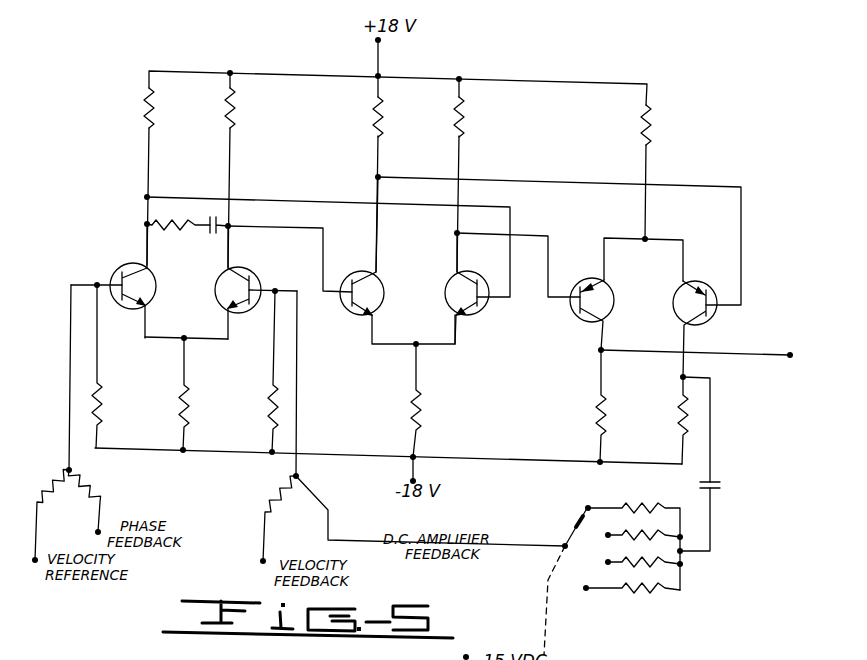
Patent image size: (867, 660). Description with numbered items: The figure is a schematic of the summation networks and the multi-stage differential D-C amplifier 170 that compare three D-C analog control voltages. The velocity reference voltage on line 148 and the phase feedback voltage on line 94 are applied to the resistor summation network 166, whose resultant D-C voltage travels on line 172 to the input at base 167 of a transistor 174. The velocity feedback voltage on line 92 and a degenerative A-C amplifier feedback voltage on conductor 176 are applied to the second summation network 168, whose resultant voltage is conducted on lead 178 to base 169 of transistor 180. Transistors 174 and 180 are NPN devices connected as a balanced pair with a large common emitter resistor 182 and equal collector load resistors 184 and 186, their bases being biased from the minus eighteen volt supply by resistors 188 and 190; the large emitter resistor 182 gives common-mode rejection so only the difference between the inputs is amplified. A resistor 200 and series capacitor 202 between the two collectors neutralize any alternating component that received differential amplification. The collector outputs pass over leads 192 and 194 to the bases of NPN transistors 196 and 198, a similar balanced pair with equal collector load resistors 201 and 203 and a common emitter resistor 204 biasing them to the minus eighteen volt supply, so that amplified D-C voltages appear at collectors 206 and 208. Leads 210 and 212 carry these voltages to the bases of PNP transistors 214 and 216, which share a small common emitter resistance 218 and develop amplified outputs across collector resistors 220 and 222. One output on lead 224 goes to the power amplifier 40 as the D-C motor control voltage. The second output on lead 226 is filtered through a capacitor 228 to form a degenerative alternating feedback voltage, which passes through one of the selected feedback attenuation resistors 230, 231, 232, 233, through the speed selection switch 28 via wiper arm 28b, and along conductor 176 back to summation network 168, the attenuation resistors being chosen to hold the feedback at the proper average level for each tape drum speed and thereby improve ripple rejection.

The load resistor 184 is at (158, 121).
The load resistor 186 is at (238, 121).
The collector load resistor 201 is at (386, 129).
The collector load resistor 203 is at (468, 131).
The common emitter resistance 218 is at (656, 138).
The resistor 200 is at (149, 222).
The series capacitor 202 is at (211, 239).
The lead 194 is at (281, 197).
The lead 192 is at (282, 223).
The lead 210 is at (532, 187).
The lead 212 is at (530, 238).
The base 167 is at (114, 283).
The transistor 174 is at (153, 277).
The transistor 180 is at (215, 295).
The base 169 is at (257, 277).
The line 172 is at (70, 395).
The resistor 188 is at (103, 412).
The common emitter resistor 182 is at (190, 412).
The resistor 190 is at (266, 410).
The lead 178 is at (300, 411).
The multi-stage differential D-C amplifier 170 is at (372, 377).
The transistor 196 is at (386, 295).
The collector 206 is at (373, 283).
The transistor 198 is at (448, 307).
The collector 208 is at (462, 278).
The common emitter resistor 204 is at (423, 418).
The transistor 216 is at (598, 278).
The transistor 214 is at (690, 279).
The collector resistor 220 is at (593, 422).
The collector resistor 222 is at (678, 422).
The lead 224 is at (705, 357).
The power amplifier 40 is at (772, 389).
The lead 226 is at (715, 460).
The capacitor 228 is at (722, 488).
The feedback attenuation resistor 230 is at (647, 500).
The feedback attenuation resistor 231 is at (640, 532).
The feedback attenuation resistor 232 is at (638, 557).
The feedback attenuation resistor 233 is at (638, 586).
The wiper arm 28b is at (577, 515).
The speed selection switch 28 is at (548, 578).
The conductor 176 is at (330, 537).
The second summation network 168 is at (311, 520).
The line 92 is at (267, 545).
The resistor summation network 166 is at (80, 514).
The line 148 is at (38, 540).
The line 94 is at (102, 516).